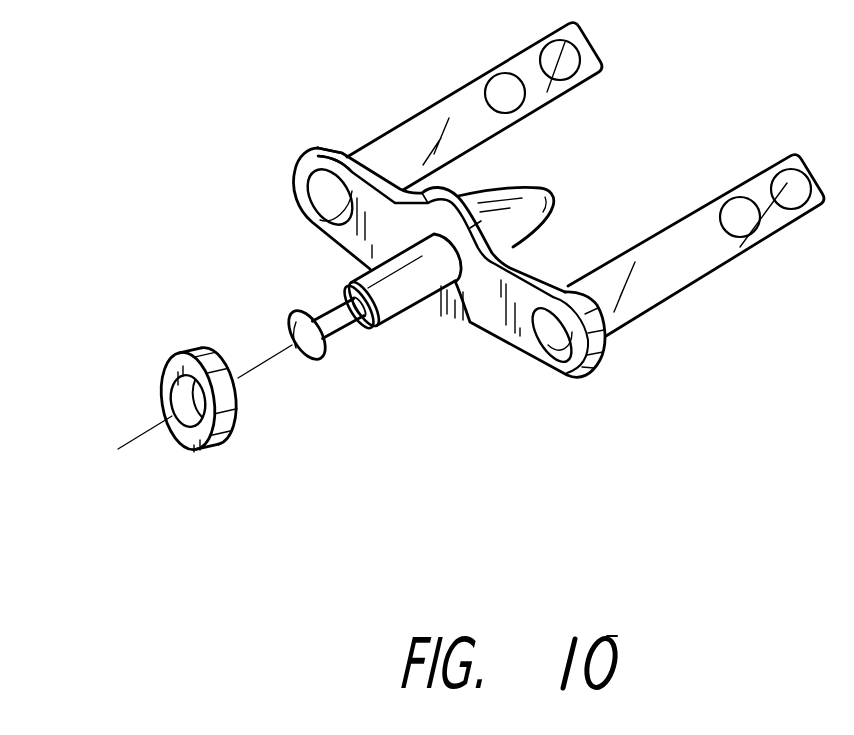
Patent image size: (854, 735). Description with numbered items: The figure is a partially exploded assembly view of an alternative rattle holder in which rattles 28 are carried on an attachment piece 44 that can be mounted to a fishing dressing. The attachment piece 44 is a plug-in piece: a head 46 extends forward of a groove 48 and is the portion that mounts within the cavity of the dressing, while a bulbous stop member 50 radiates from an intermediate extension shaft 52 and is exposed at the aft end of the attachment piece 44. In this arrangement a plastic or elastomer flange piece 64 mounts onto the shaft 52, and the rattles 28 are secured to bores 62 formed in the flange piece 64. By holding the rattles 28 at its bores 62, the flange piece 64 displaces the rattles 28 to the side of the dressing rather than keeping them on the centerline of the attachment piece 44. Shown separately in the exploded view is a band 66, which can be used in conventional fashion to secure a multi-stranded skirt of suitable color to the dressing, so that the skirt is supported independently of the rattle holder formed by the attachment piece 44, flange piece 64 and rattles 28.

The rattles 28 is at (733, 190).
The attachment piece 44 is at (332, 268).
The head 46 is at (314, 361).
The groove 48 is at (343, 330).
The bulbous stop member 50 is at (557, 188).
The intermediate extension shaft 52 is at (404, 288).
The bores 62 is at (343, 150).
The flange piece 64 is at (288, 140).
The band 66 is at (162, 377).